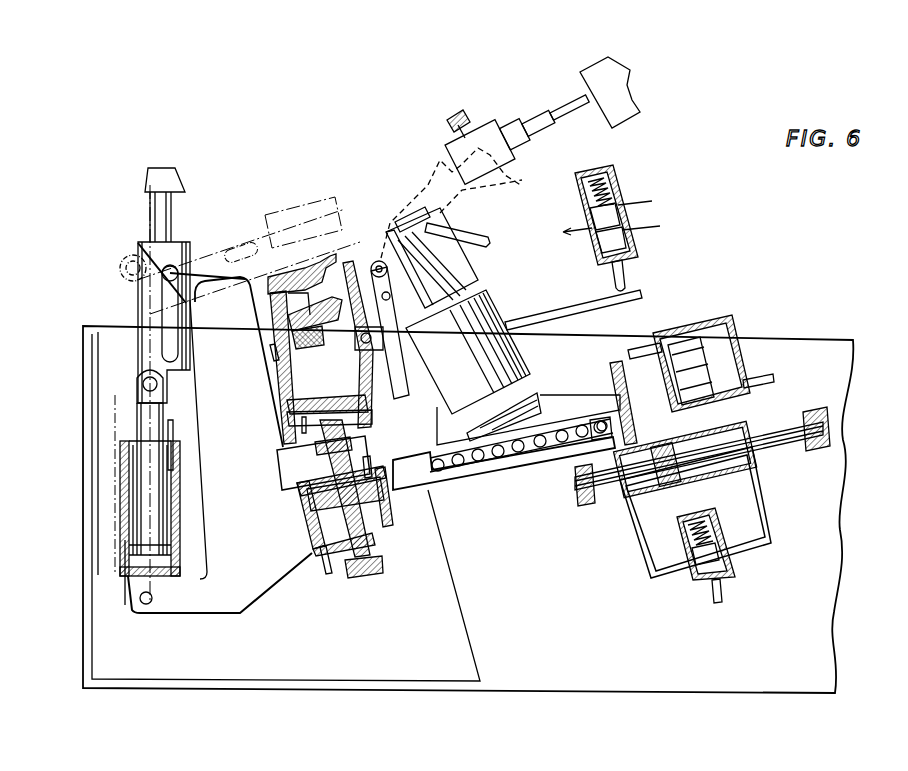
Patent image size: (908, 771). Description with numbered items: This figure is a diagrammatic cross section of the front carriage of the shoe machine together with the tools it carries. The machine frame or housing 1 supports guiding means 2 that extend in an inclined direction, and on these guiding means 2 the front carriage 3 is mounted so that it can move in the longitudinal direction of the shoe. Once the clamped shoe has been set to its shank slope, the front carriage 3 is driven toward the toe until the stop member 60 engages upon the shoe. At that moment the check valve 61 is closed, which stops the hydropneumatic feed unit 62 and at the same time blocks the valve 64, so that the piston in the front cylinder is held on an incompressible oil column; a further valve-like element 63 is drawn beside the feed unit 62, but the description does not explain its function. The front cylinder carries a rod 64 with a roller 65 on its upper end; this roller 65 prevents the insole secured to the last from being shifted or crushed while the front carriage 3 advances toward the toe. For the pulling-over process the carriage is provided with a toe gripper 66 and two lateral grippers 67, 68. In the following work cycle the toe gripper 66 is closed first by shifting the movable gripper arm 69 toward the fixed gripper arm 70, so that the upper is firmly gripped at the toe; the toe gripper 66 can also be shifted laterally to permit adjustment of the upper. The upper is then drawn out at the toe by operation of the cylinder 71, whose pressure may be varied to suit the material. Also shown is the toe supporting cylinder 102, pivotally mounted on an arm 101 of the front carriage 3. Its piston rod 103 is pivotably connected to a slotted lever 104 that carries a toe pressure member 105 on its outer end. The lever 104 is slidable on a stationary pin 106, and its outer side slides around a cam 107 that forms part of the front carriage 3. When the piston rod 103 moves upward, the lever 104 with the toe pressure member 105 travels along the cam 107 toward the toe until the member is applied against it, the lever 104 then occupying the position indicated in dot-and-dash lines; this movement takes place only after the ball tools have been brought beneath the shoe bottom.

The machine frame 1 is at (823, 535).
The guiding means 2 is at (505, 452).
The front carriage 3 is at (423, 488).
The stop member 60 is at (348, 262).
The check valve 61 is at (625, 170).
The hydropneumatic feed unit 62 is at (745, 428).
The control valve 63 is at (692, 582).
The rod 64 is at (453, 277).
The roller 65 is at (381, 260).
The toe gripper 66 is at (278, 312).
The lateral gripper 67 is at (518, 341).
The lateral gripper 68 is at (573, 310).
The movable gripper arm 69 is at (336, 270).
The fixed gripper arm 70 is at (330, 258).
The cylinder 71 is at (308, 530).
The arm 101 is at (212, 600).
The toe supporting cylinder 102 is at (120, 528).
The piston rod 103 is at (145, 432).
The slotted lever 104 is at (145, 310).
The toe pressure member 105 is at (177, 181).
The stationary pin 106 is at (165, 270).
The cam 107 is at (218, 276).